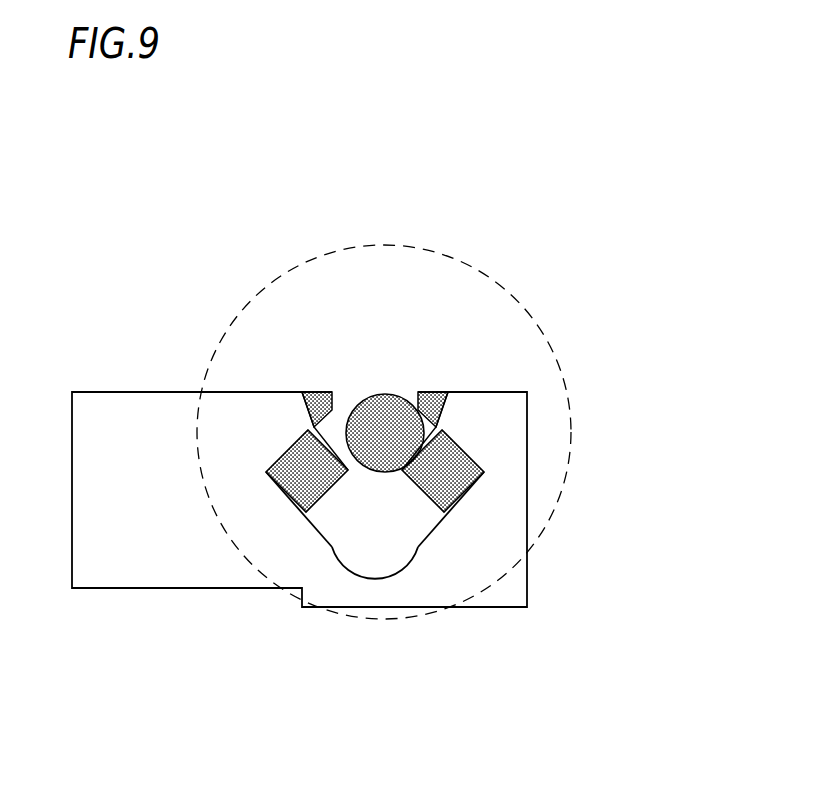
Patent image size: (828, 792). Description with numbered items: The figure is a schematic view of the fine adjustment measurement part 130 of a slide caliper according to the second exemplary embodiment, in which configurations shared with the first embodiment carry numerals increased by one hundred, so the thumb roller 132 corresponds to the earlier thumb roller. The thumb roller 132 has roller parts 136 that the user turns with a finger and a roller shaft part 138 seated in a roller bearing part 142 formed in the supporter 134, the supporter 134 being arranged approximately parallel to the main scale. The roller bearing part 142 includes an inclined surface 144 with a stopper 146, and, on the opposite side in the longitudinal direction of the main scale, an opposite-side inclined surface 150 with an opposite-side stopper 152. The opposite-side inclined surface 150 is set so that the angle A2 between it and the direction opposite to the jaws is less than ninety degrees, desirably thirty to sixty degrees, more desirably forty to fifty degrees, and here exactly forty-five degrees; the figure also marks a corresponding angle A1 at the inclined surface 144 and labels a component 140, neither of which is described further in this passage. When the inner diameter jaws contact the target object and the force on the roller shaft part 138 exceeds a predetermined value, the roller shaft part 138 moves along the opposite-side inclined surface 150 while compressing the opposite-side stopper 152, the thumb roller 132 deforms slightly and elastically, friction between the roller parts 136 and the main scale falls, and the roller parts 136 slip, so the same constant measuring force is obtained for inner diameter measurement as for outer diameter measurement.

The fine adjustment measurement part 130 is at (331, 200).
The thumb roller 132 is at (515, 300).
The supporter 134 is at (98, 391).
The roller parts 136 is at (502, 360).
The roller shaft part 138 is at (386, 394).
The substrate 140 is at (111, 568).
The roller bearing part 142 is at (372, 523).
The inclined surface 144 is at (266, 472).
The stopper 146 is at (328, 498).
The opposite-side inclined surface 150 is at (467, 457).
The opposite-side stopper 152 is at (422, 486).
The first gap region A1 is at (307, 431).
The angle A2 is at (444, 431).